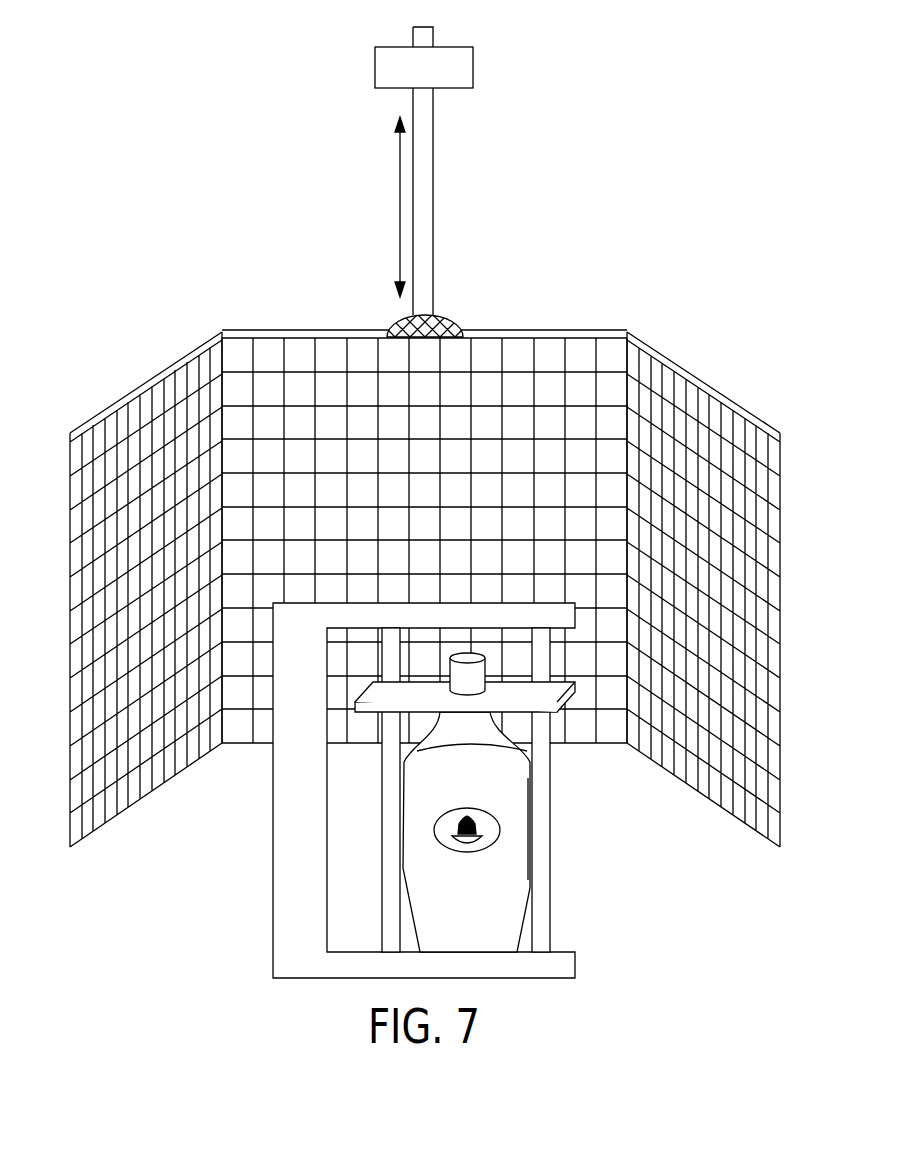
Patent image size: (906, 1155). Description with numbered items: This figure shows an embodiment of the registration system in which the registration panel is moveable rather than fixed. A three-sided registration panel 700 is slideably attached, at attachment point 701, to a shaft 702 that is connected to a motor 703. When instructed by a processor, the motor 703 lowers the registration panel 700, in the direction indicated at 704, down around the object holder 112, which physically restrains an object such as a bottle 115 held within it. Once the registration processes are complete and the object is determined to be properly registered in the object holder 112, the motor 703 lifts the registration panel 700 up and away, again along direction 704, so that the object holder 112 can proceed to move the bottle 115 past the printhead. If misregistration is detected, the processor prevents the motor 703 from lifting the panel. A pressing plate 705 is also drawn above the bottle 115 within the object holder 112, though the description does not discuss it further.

The three-sided registration panel 700 is at (80, 414).
The slideable attachment 701 is at (443, 318).
The shaft 702 is at (435, 202).
The motor 703 is at (475, 67).
The lowering and lifting direction 704 is at (397, 210).
The pressing plate 705 is at (465, 682).
The object holder 112 is at (262, 923).
The bottle 115 is at (497, 902).